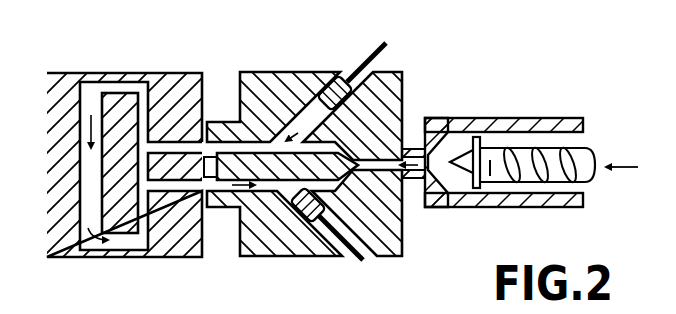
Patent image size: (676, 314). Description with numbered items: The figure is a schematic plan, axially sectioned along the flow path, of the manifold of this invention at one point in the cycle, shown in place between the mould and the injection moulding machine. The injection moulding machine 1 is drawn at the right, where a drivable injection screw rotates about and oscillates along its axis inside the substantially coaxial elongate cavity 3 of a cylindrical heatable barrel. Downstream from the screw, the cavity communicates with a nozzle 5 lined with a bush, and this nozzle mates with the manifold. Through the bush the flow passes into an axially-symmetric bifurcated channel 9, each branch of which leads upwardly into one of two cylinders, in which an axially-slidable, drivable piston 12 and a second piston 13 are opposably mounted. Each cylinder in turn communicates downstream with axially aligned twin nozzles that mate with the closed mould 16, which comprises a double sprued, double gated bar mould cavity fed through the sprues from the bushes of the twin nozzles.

The injection moulding machine 1 is at (562, 110).
The elongate cavity 3 is at (532, 140).
The nozzle 5 is at (406, 150).
The bifurcated channel 9 is at (396, 208).
The piston 12 is at (333, 85).
The piston 13 is at (312, 218).
The mould 16 is at (168, 70).